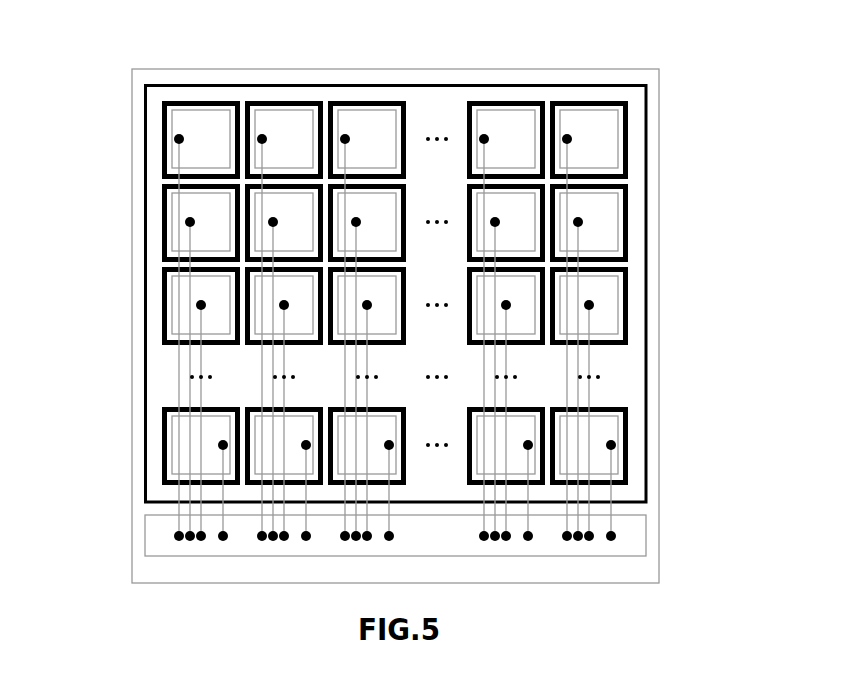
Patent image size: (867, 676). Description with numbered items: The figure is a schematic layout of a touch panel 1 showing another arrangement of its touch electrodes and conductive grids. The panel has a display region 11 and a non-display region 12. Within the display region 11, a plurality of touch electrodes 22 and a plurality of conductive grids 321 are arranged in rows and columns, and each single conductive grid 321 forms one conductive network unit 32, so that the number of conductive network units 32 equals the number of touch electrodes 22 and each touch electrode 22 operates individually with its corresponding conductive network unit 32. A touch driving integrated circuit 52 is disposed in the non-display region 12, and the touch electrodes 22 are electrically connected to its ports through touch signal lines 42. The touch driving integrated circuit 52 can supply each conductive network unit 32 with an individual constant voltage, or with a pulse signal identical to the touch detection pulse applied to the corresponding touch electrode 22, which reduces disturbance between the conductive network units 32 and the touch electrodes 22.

The display substrate 1 is at (662, 310).
The display region 11 is at (647, 405).
The non-display region 12 is at (652, 518).
The touch electrode 22 is at (368, 112).
The conductive network unit 32 is at (483, 100).
The conductive grid 321 is at (537, 110).
The touch signal line 42 is at (178, 372).
The touch driving integrated circuit 52 is at (145, 552).